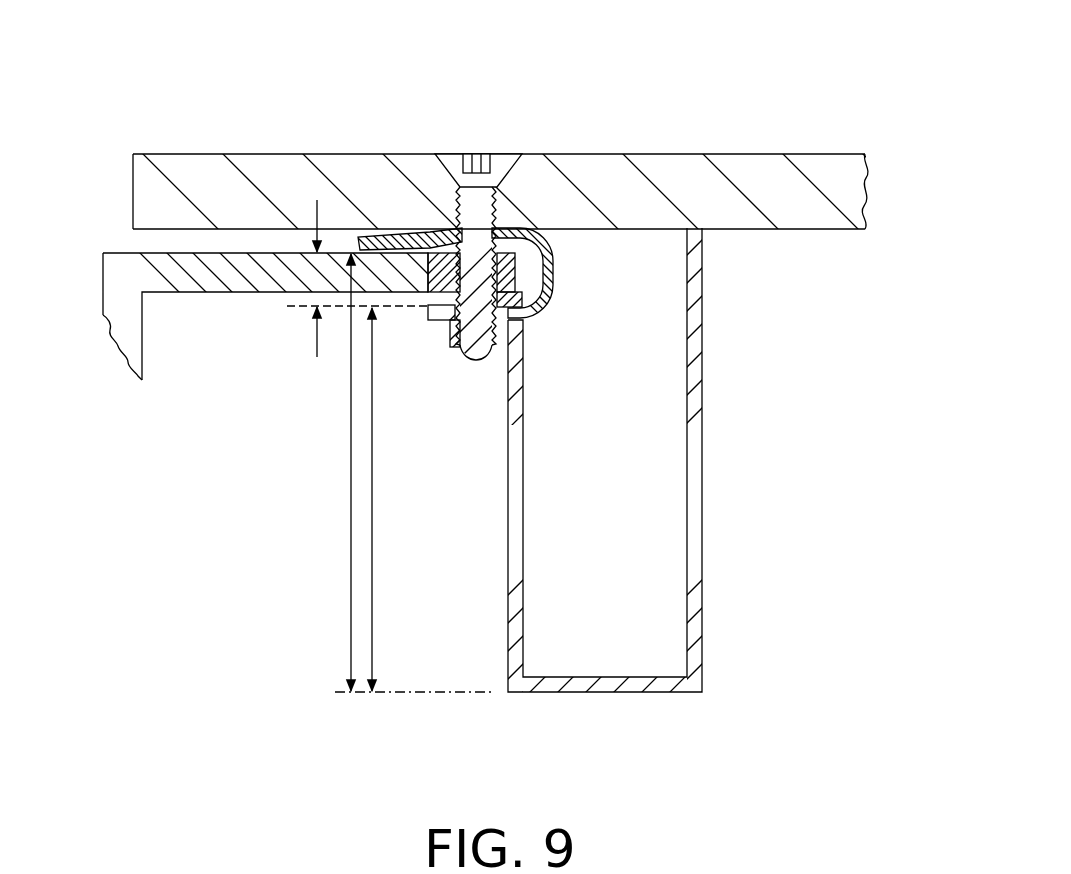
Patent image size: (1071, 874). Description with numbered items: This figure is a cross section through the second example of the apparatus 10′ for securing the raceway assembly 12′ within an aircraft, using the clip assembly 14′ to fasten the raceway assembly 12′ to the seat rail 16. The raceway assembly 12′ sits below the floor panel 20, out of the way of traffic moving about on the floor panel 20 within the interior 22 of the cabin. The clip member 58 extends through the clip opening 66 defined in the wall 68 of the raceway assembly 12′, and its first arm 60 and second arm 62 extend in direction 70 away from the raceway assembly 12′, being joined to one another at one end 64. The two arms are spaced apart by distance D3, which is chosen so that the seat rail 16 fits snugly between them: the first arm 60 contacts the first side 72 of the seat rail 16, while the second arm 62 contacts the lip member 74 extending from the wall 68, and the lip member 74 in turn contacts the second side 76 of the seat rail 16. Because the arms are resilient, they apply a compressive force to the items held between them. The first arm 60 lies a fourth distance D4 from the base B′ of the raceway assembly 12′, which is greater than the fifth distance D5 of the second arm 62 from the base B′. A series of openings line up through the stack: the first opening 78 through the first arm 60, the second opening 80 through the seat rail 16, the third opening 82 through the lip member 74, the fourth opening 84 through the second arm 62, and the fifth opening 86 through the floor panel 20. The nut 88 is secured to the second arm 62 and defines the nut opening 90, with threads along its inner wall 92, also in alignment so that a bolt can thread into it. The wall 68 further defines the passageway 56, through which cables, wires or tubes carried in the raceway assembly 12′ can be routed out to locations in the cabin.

The interior 22 is at (491, 31).
The floor panel 20 is at (822, 178).
The seat rail 16 is at (200, 277).
The clip assembly 14′ is at (426, 222).
The raceway assembly 12′ is at (717, 385).
The apparatus 10′ is at (325, 424).
The passageway 56 is at (615, 466).
The clip member 58 is at (562, 243).
The first arm 60 is at (441, 229).
The second arm 62 is at (429, 220).
The end 64 is at (553, 273).
The clip opening 66 is at (528, 332).
The wall 68 is at (702, 283).
The direction 70 is at (182, 410).
The first side 72 is at (207, 252).
The lip member 74 is at (440, 233).
The second side 76 is at (212, 293).
The first opening 78 is at (523, 248).
The second opening 80 is at (553, 247).
The third opening 82 is at (528, 318).
The fourth opening 84 is at (443, 325).
The fifth opening 86 is at (505, 186).
The nut 88 is at (452, 336).
The nut opening 90 is at (495, 325).
The inner wall 92 is at (523, 378).
The distance D3 is at (315, 330).
The fourth distance D4 is at (350, 497).
The fifth distance D5 is at (373, 482).
The base B′ is at (612, 701).